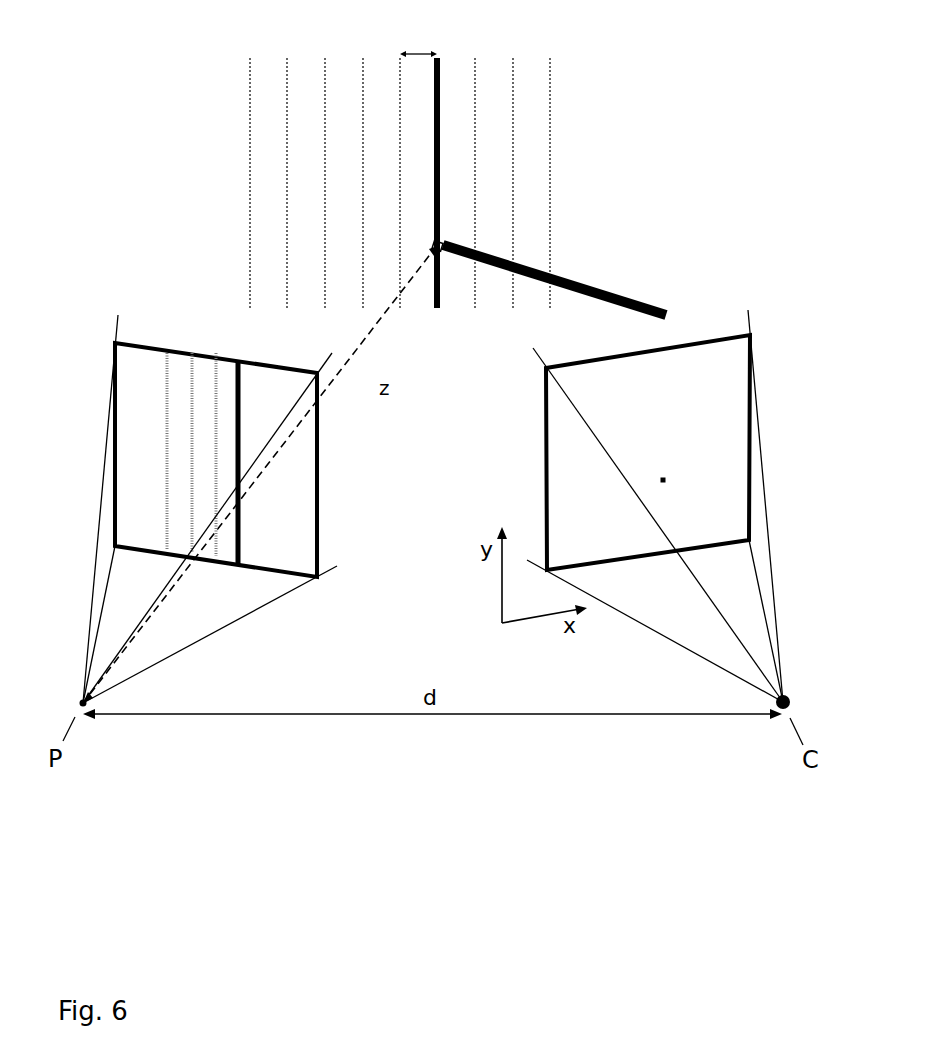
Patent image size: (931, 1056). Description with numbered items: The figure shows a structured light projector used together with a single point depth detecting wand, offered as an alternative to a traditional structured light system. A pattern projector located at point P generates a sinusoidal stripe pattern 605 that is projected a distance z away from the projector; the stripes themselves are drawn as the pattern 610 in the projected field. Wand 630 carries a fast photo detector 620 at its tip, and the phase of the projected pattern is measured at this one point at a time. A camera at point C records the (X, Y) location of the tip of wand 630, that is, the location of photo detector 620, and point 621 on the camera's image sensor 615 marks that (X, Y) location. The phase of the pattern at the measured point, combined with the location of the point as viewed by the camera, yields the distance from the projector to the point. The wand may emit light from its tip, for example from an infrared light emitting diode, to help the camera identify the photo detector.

The sinusoidal stripe pattern 605 is at (177, 405).
The structured light grating pattern 610 is at (338, 117).
The image sensor 615 is at (727, 389).
The fast photo detector 620 is at (445, 242).
The image point of 620 in camera plane 621 is at (671, 472).
The wand 630 is at (622, 289).